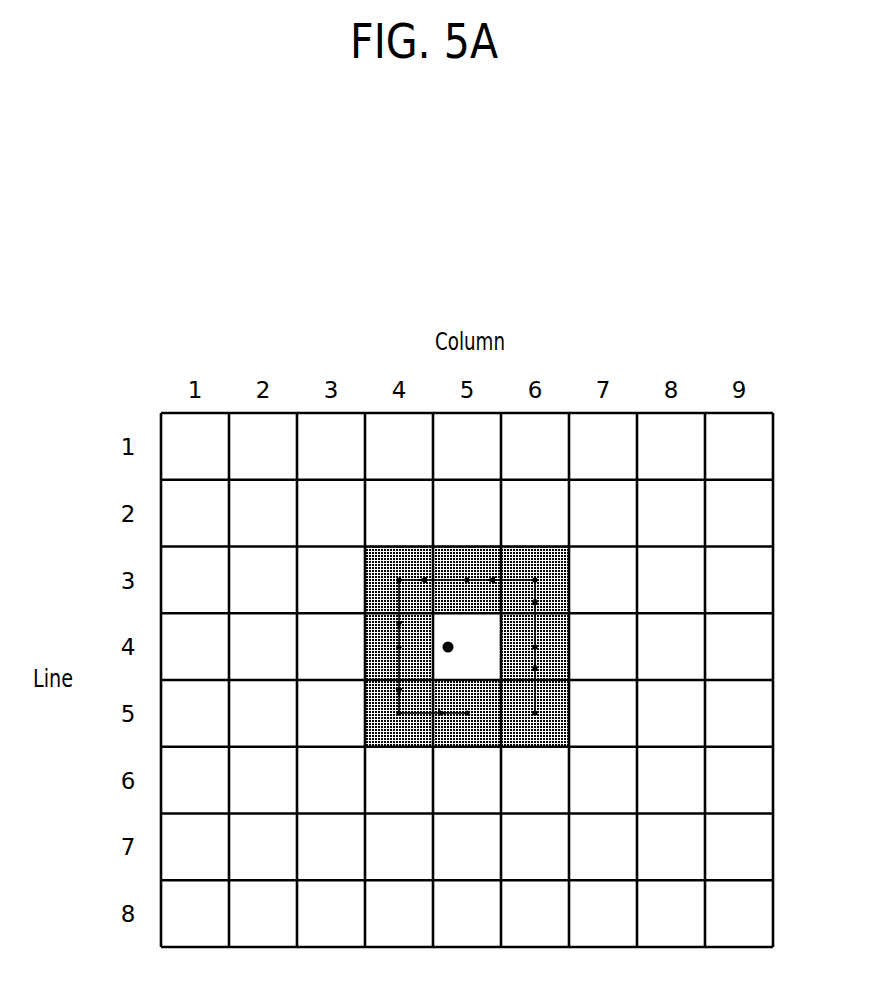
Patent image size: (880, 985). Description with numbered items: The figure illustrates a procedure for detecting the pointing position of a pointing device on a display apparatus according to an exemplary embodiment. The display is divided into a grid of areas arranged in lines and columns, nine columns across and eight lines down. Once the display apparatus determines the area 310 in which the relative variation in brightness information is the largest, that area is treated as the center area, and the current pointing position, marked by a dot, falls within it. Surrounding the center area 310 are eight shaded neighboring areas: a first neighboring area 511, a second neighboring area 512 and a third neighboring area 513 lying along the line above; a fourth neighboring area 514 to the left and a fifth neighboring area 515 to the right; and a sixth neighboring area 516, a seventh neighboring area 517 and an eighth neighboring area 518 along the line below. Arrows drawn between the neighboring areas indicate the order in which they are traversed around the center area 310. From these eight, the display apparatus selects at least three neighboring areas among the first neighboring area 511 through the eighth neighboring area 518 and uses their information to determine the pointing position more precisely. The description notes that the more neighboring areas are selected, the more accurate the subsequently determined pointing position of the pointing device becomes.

The center area 310 is at (485, 629).
The first neighboring area 511 is at (397, 557).
The second neighboring area 512 is at (466, 557).
The third neighboring area 513 is at (534, 557).
The fourth neighboring area 514 is at (375, 648).
The fifth neighboring area 515 is at (562, 647).
The sixth neighboring area 516 is at (400, 736).
The seventh neighboring area 517 is at (468, 736).
The eighth neighboring area 518 is at (536, 736).